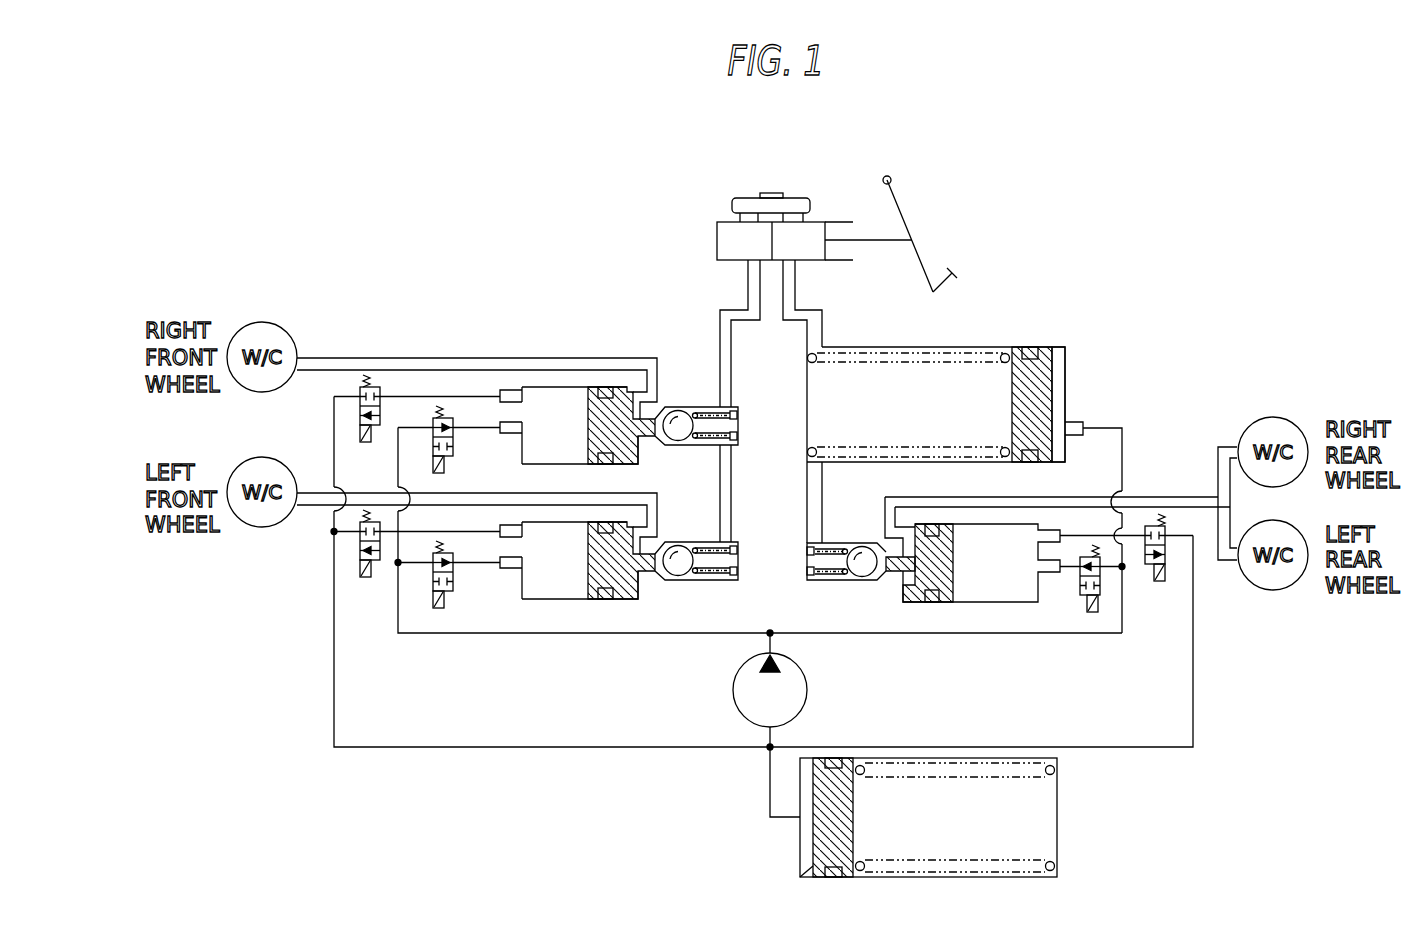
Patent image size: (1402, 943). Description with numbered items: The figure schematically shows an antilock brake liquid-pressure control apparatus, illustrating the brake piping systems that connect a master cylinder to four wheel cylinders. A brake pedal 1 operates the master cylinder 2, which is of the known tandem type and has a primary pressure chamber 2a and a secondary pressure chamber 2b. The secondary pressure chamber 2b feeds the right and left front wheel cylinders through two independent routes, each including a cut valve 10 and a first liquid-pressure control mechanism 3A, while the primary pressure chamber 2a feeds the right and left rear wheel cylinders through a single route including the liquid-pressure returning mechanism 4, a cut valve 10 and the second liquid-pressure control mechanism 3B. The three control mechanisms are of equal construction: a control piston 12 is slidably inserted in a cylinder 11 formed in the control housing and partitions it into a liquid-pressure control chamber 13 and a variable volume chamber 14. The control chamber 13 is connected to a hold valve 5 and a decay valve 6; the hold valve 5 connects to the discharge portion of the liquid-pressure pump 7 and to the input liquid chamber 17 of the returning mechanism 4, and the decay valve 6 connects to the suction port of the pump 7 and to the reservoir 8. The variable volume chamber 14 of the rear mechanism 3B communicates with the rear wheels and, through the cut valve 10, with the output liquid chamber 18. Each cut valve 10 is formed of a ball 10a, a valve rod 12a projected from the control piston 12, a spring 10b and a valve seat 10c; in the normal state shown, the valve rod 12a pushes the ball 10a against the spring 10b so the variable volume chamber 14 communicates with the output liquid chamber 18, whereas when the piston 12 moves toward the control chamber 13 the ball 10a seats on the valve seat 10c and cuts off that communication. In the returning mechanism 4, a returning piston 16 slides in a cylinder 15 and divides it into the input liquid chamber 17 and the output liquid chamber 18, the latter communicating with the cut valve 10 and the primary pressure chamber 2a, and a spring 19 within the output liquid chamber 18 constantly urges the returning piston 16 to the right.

The brake pedal 1 is at (918, 247).
The master cylinder 2 is at (818, 218).
The primary pressure chamber 2a is at (812, 262).
The secondary pressure chamber 2b is at (732, 262).
The first liquid-pressure control mechanism 3A is at (679, 495).
The second liquid-pressure control mechanism 3B is at (1055, 647).
The liquid-pressure returning mechanism 4 is at (953, 357).
The hold valve 5 is at (430, 452).
The decay valve 6 is at (352, 413).
The liquid-pressure pump 7 is at (733, 690).
The reservoir 8 is at (1057, 817).
The cut valve 10 is at (785, 517).
The ball 10a is at (862, 577).
The spring 10b is at (815, 577).
The valve seat 10c is at (880, 543).
The cylinder 11 is at (560, 535).
The control piston 12 is at (595, 395).
The valve rod 12a is at (893, 572).
The liquid-pressure control chamber 13 is at (555, 400).
The variable volume chamber 14 is at (637, 395).
The cylinder 15 is at (910, 347).
The returning piston 16 is at (1042, 378).
The input liquid chamber 17 is at (1062, 383).
The output liquid chamber 18 is at (813, 385).
The spring 19 is at (972, 355).